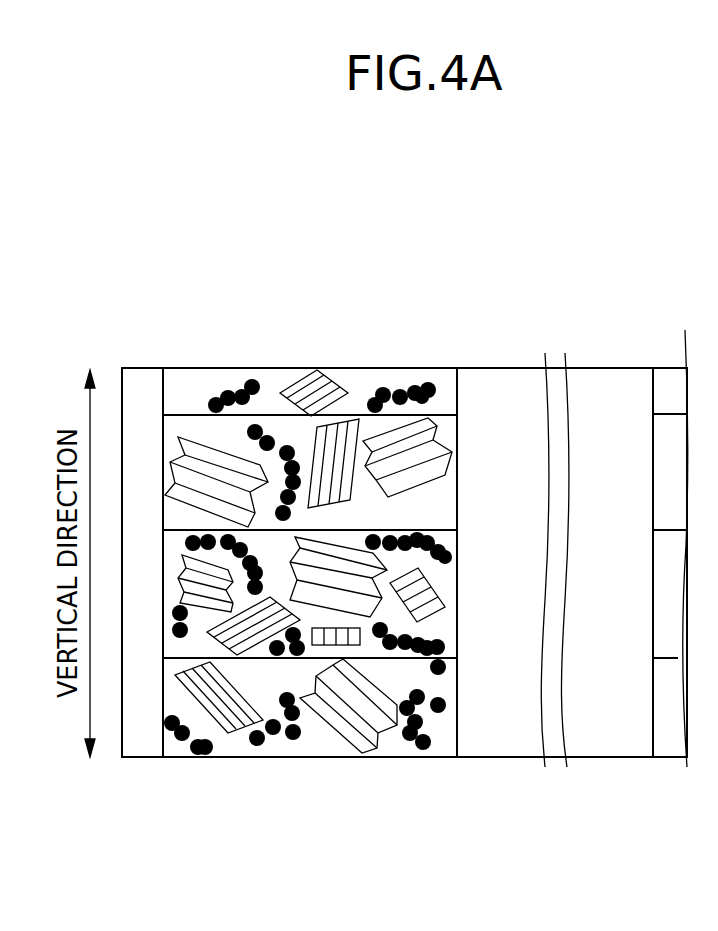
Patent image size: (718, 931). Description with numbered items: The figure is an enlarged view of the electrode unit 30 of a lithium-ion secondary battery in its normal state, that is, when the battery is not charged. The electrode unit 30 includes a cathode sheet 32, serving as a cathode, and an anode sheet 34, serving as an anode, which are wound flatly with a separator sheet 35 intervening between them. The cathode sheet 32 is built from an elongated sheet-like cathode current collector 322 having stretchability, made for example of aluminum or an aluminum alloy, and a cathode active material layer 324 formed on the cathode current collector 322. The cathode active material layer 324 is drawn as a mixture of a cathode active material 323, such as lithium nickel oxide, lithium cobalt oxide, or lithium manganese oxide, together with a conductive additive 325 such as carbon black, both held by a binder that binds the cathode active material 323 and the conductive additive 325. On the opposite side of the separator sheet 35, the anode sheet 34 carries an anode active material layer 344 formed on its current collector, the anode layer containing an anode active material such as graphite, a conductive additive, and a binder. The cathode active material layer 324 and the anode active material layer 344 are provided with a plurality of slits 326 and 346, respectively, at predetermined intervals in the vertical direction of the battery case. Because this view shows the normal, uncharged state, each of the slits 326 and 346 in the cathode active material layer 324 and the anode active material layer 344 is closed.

The electrode unit 30 is at (240, 205).
The cathode sheet 32 is at (457, 362).
The anode sheet 34 is at (655, 362).
The separator sheet 35 is at (653, 362).
The cathode current collector 322 is at (148, 763).
The cathode active material 323 is at (233, 736).
The cathode active material layer 324 is at (318, 763).
The conductive additive 325 is at (420, 748).
The slits 326 is at (428, 521).
The anode active material layer 344 is at (667, 763).
The slits 346 is at (672, 523).